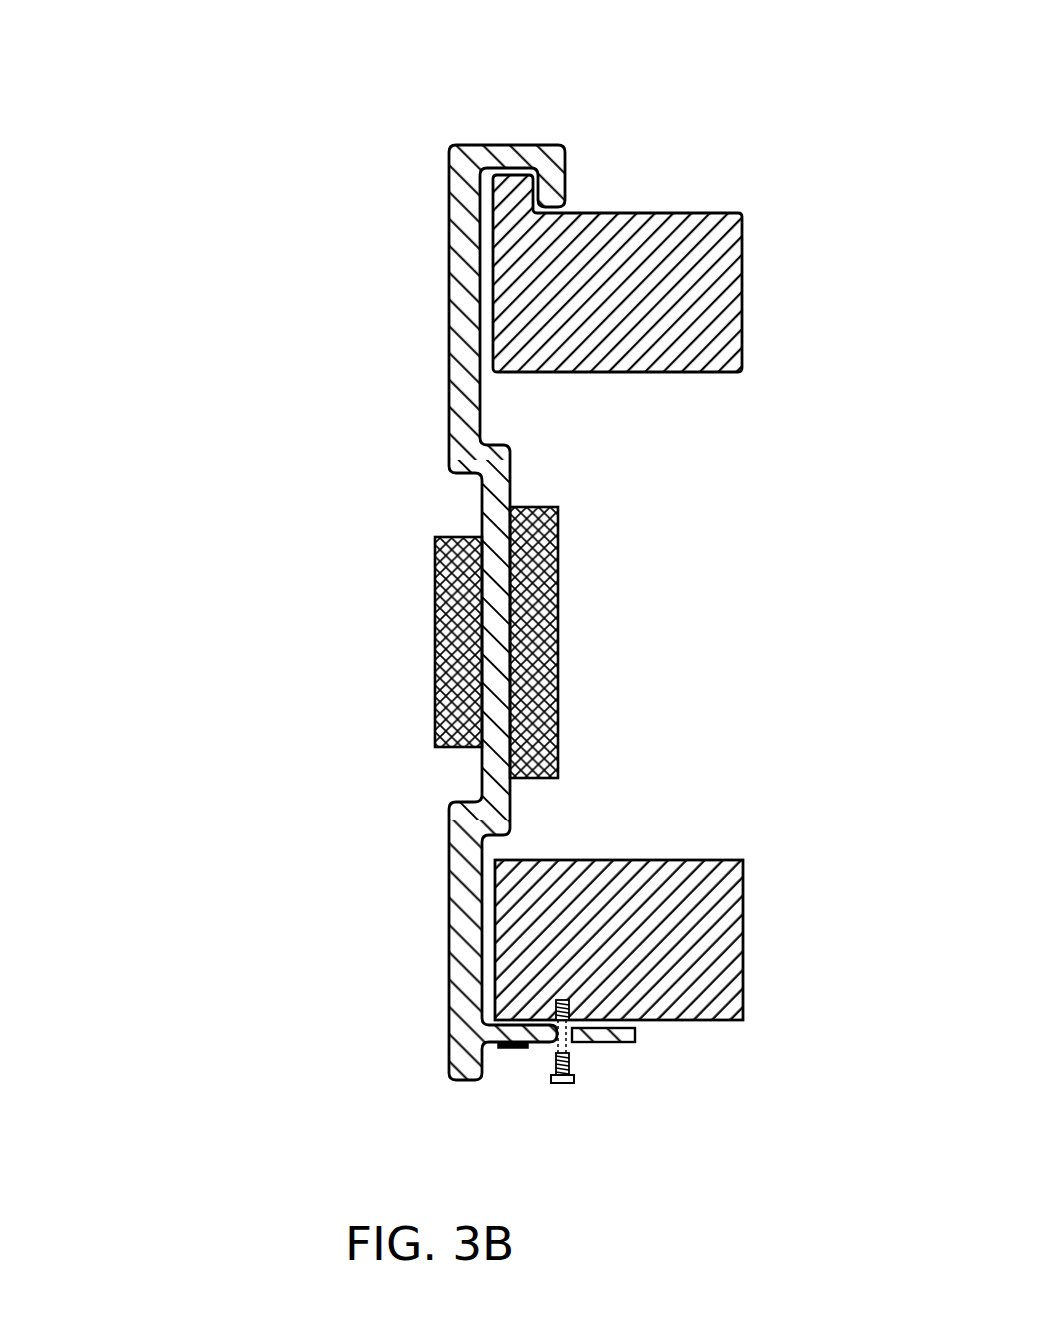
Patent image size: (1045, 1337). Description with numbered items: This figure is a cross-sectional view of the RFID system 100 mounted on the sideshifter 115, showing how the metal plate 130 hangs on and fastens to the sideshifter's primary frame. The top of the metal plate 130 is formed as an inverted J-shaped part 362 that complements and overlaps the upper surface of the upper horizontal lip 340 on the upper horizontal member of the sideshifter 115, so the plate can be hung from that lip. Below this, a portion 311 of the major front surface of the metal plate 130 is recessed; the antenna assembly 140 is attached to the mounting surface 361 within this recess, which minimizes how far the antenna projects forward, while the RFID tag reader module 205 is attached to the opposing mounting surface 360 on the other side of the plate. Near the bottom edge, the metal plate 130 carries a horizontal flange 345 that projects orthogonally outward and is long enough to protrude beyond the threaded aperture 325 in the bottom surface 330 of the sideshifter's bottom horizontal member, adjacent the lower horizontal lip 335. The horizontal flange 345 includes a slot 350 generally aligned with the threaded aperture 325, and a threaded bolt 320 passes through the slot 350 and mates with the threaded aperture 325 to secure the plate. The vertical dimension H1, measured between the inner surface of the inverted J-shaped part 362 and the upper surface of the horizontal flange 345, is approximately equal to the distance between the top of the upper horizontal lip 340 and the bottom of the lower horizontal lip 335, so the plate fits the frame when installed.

The RFID system 100 is at (125, 120).
The metal plate 130 is at (325, 313).
The inverted J-shaped part 362 is at (488, 132).
The upper horizontal lip 340 is at (517, 175).
The sideshifter 115 is at (790, 290).
The recessed portion of the major front surface 311 is at (437, 503).
The opposing mounting surface 360 is at (510, 483).
The mounting surface 361 is at (482, 773).
The antenna assembly 140 is at (435, 642).
The RFID tag reader module 205 is at (560, 633).
The vertical dimension H1 is at (449, 1027).
The horizontal flange 345 is at (632, 1042).
The bottom surface 330 is at (725, 1020).
The slot 350 is at (574, 1046).
The threaded aperture 325 is at (526, 1048).
The lower horizontal lip 335 is at (502, 1045).
The threaded bolt 320 is at (563, 1085).